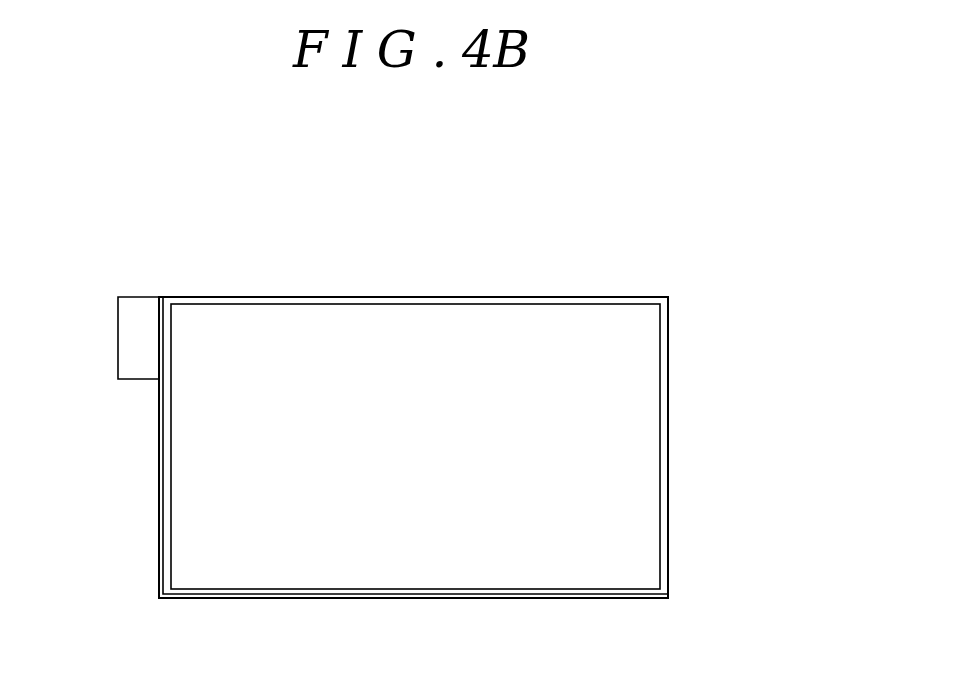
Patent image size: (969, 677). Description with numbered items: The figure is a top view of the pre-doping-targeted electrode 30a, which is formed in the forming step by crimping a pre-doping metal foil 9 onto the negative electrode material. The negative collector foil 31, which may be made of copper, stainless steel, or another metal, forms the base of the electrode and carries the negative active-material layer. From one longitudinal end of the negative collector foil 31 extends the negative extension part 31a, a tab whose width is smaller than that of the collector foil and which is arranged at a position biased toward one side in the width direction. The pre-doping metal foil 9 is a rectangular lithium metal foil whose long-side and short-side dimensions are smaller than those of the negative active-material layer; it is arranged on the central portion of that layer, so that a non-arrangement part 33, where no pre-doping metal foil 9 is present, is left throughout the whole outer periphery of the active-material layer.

The pre-doping-targeted electrode 30a is at (700, 318).
The non-arrangement part 33 is at (662, 403).
The pre-doping metal foil 9 is at (648, 513).
The negative collector foil 31 is at (159, 431).
The negative extension part 31a is at (127, 356).